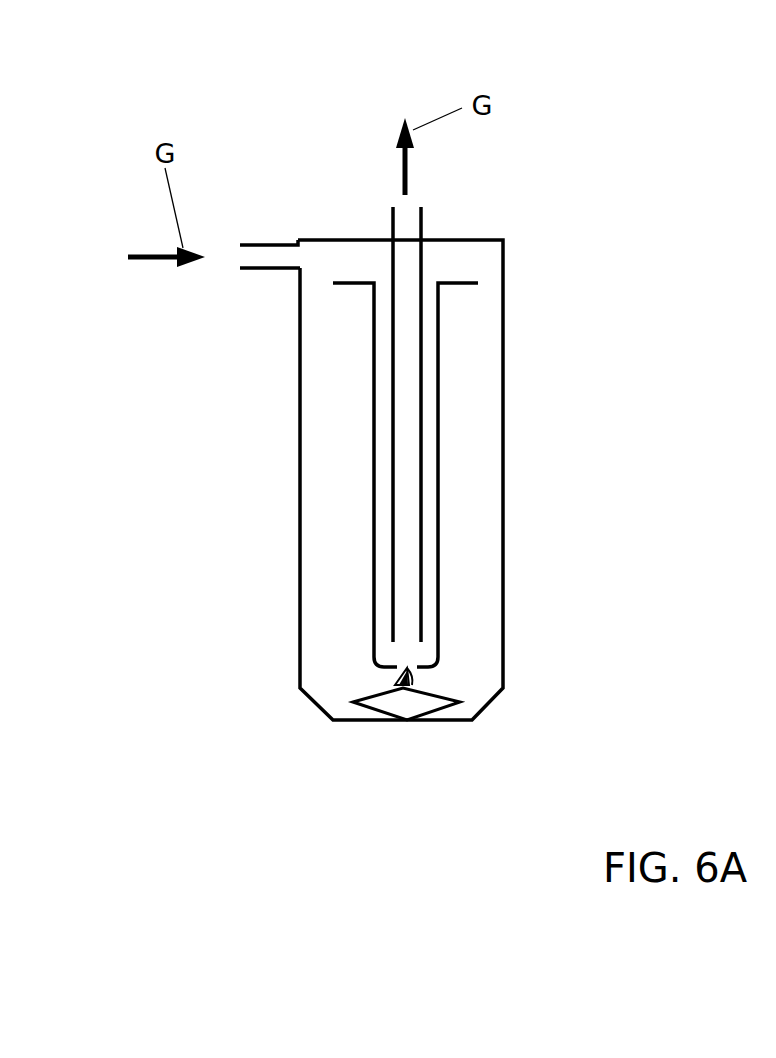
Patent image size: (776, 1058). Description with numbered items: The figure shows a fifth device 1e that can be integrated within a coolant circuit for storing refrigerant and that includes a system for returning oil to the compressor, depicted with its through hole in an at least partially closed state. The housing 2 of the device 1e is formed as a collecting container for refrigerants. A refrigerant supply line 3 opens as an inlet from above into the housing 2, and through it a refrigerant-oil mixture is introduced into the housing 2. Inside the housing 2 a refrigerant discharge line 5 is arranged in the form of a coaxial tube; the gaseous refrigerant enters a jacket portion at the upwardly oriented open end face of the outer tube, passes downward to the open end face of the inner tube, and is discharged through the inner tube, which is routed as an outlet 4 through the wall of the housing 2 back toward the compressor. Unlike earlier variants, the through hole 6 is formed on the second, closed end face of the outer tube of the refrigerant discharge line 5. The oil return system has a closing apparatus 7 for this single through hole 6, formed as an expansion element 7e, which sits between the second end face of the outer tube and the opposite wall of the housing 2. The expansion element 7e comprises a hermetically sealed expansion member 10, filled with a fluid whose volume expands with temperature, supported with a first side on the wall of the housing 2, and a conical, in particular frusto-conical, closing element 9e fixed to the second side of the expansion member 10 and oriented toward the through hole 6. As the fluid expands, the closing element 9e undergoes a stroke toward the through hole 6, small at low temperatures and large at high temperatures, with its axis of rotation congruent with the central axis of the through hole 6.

The fifth device 1e is at (620, 112).
The housing 2 is at (505, 262).
The refrigerant supply line 3 is at (240, 243).
The outlet 4 is at (424, 213).
The refrigerant discharge line 5 is at (377, 465).
The through hole 6 is at (403, 667).
The closing apparatus 7 is at (537, 652).
The expansion element 7e is at (479, 671).
The closing element 9e is at (397, 682).
The expansion member 10 is at (402, 703).